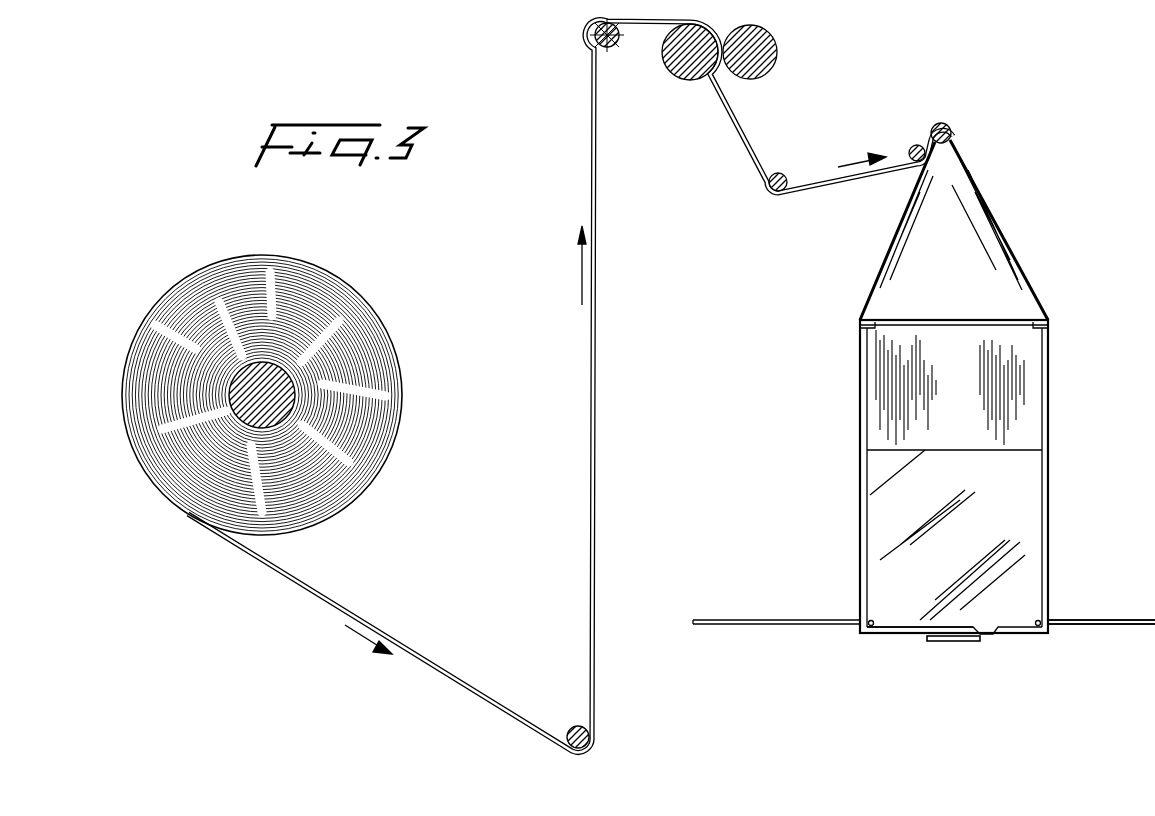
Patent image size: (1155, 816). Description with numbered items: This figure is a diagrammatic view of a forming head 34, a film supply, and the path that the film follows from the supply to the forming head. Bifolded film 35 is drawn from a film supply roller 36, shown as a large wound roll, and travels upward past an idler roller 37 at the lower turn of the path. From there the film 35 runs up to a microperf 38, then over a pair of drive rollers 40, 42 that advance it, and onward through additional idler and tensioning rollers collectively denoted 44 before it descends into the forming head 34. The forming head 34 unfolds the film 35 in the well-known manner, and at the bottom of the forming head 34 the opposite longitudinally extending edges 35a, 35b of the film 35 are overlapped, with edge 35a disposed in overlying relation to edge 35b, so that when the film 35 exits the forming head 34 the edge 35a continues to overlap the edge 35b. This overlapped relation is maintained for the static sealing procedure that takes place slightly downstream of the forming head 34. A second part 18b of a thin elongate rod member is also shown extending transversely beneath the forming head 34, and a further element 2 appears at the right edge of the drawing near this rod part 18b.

The second part of rod member 18b is at (748, 626).
The container 2 is at (1118, 616).
The forming head 34 is at (852, 463).
The bifolded film 35 is at (598, 357).
The longitudinally extending edge of film 35a is at (970, 620).
The longitudinally extending edge of film 35b is at (945, 642).
The film supply roller 36 is at (378, 360).
The idler roller 37 is at (571, 727).
The microperf 38 is at (596, 41).
The drive roller 40 is at (692, 80).
The drive roller 42 is at (777, 48).
The idler and tensioning rollers 44 is at (781, 173).